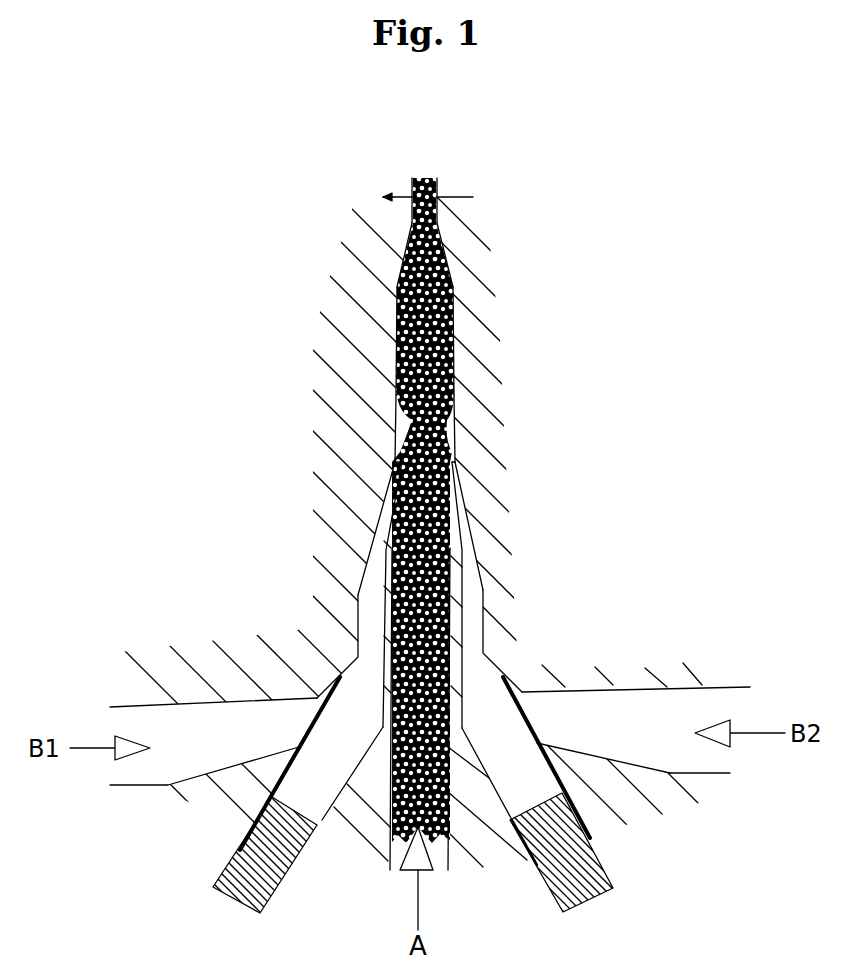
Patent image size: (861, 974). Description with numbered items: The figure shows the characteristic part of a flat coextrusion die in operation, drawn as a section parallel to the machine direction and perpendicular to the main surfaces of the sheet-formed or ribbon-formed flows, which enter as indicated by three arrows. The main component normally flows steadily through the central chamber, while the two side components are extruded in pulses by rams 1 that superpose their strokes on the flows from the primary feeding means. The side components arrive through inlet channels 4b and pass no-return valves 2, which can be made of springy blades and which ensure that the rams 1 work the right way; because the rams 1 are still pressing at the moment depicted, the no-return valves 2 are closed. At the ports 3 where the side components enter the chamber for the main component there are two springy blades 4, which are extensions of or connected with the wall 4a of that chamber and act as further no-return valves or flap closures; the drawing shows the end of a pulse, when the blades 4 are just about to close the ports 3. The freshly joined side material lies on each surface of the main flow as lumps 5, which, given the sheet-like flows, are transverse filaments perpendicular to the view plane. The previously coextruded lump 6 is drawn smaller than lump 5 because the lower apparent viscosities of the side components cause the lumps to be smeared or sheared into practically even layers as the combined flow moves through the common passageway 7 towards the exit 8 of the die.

The ram 1 is at (240, 892).
The no-return valve 2 is at (310, 727).
The port 3 is at (395, 461).
The springy blade 4 is at (397, 500).
The wall of the chamber for A 4a is at (388, 612).
The inlet channel 4b is at (376, 570).
The lump 5 is at (398, 428).
The previously coextruded lump 6 is at (396, 345).
The common passageway 7 is at (396, 305).
The exit 8 is at (440, 198).